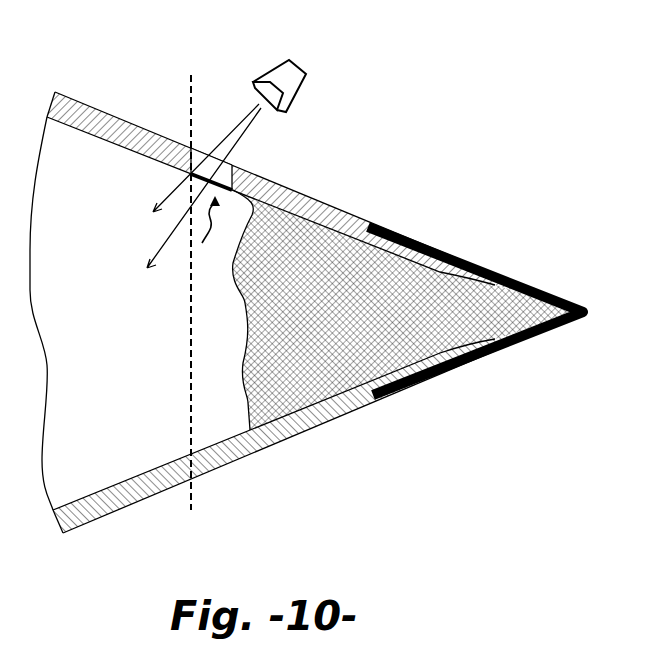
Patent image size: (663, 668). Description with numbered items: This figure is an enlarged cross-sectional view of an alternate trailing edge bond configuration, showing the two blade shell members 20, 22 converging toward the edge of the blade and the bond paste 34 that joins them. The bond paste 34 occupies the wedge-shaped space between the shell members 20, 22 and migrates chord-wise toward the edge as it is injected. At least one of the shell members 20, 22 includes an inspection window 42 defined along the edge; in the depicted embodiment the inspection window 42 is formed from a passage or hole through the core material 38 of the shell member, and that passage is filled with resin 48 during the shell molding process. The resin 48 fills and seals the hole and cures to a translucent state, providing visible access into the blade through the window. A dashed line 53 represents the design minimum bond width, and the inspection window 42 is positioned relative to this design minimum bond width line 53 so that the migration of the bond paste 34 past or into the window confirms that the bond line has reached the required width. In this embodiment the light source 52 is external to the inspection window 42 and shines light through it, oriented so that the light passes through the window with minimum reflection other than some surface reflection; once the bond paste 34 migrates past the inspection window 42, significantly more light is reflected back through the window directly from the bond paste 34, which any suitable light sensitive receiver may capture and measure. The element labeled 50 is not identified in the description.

The shell member 20 is at (96, 104).
The shell member 22 is at (118, 513).
The bond paste 34 is at (362, 332).
The core material 38 is at (329, 212).
The inspection window 42 is at (210, 236).
The resin 48 is at (195, 158).
The leading edge cap 50 is at (572, 302).
The light source 52 is at (302, 90).
The design minimum bond width line 53 is at (191, 413).